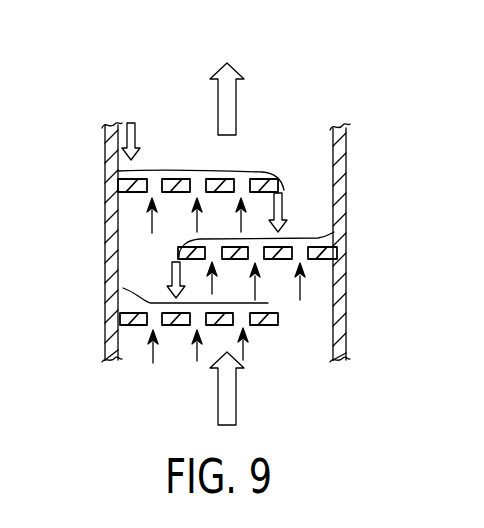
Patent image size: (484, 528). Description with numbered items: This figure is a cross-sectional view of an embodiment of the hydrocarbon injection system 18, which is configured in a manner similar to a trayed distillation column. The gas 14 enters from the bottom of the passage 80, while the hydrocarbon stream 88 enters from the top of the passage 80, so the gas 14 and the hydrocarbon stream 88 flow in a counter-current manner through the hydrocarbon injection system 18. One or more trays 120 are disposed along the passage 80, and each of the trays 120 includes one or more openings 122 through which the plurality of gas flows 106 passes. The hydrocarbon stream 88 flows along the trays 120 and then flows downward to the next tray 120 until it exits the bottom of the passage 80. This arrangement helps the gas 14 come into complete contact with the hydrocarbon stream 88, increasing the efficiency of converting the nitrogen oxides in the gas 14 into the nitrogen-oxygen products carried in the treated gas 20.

The hydrocarbon injection system 18 is at (316, 50).
The treated gas 20 is at (240, 66).
The gas 14 is at (218, 388).
The passage 80 is at (348, 249).
The tray 120 is at (132, 193).
The opening 122 is at (151, 173).
The hydrocarbon stream 88 is at (139, 126).
The gas flow 106 is at (155, 221).